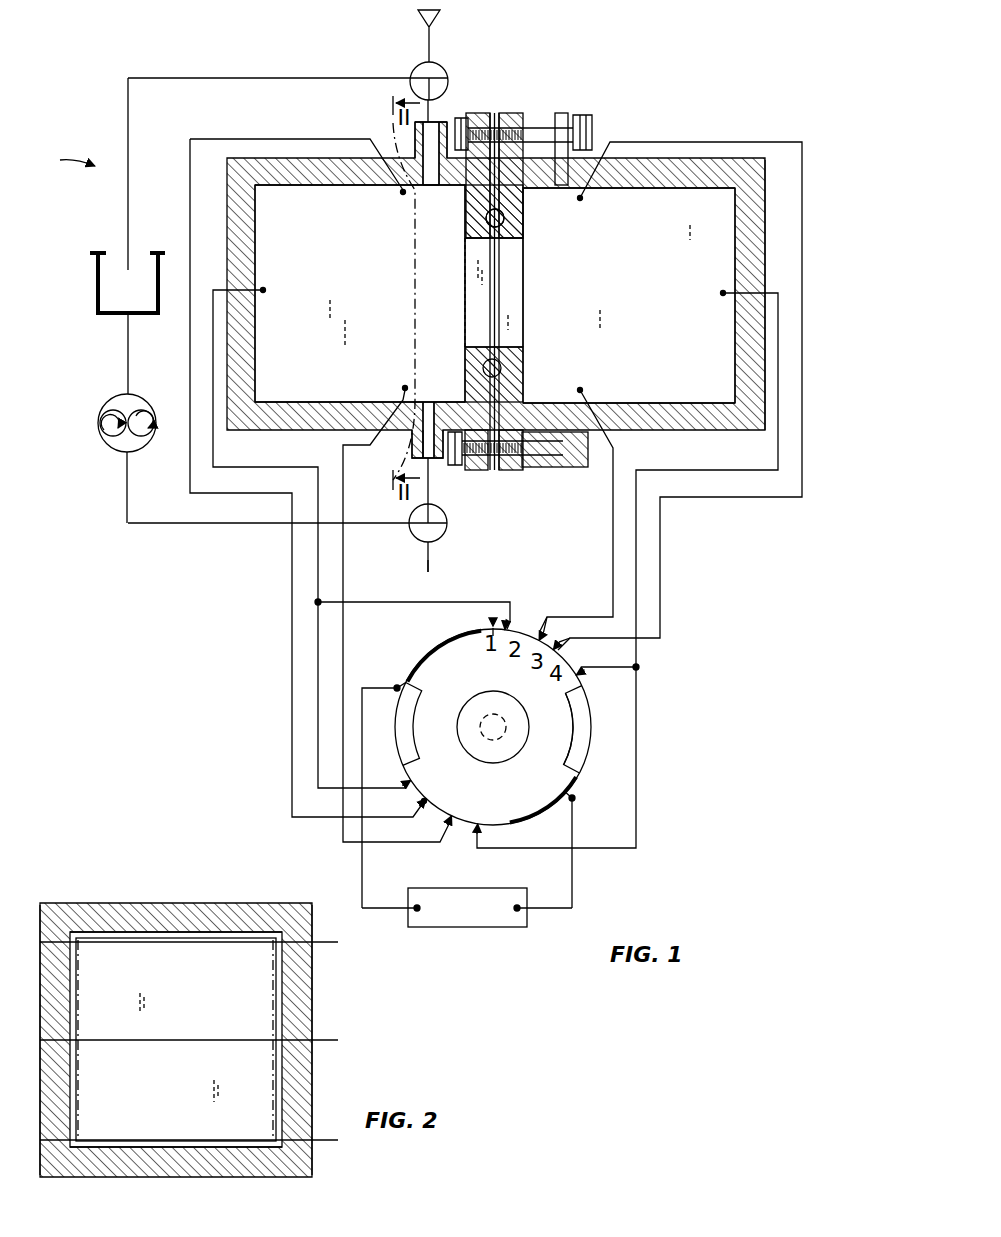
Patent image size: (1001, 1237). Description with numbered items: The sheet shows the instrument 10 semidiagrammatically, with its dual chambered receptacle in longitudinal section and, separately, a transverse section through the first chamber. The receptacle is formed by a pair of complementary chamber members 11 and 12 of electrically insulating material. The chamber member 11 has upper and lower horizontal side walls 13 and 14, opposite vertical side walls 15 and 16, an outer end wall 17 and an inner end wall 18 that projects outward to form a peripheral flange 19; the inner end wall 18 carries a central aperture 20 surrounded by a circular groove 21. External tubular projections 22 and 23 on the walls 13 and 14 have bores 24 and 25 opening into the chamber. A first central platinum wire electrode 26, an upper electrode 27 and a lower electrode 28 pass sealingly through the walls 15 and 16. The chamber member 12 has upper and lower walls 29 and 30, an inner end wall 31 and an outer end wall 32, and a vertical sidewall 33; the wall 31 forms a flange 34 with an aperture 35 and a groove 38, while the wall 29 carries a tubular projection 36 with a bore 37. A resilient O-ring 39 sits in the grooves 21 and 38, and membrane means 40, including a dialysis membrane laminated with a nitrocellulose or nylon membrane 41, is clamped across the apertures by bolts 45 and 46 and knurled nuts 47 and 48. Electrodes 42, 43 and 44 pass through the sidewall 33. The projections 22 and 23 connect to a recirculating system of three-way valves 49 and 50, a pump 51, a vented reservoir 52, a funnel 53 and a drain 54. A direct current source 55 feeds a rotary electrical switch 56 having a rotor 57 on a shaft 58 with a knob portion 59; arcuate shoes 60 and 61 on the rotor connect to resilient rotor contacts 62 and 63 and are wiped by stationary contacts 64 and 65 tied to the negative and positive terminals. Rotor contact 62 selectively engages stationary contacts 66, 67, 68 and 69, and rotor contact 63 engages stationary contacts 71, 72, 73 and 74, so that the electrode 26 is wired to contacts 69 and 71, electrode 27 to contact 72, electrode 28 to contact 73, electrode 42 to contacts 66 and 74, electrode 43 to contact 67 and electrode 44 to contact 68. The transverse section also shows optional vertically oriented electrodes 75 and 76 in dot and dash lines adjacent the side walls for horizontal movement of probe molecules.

In FIG. 1, the instrument 10 is at (63, 158).
In FIG. 1, the chamber member 11 is at (229, 216).
In FIG. 2, the chamber member 11 is at (80, 902).
In FIG. 1, the chamber member 12 is at (766, 210).
In FIG. 1, the upper horizontal side wall 13 is at (320, 186).
In FIG. 2, the upper horizontal side wall 13 is at (222, 902).
In FIG. 1, the lower horizontal side wall 14 is at (330, 401).
In FIG. 2, the lower horizontal side wall 14 is at (205, 1178).
In FIG. 1, the vertical side wall 15 is at (347, 308).
In FIG. 2, the vertical side wall 15 is at (312, 1062).
In FIG. 2, the vertical side wall 16 is at (40, 1072).
In FIG. 1, the outer vertical end wall 17 is at (255, 346).
In FIG. 2, the outer vertical end wall 17 is at (179, 1047).
In FIG. 1, the inner end wall 18 is at (466, 224).
In FIG. 1, the peripheral flange 19 is at (482, 112).
In FIG. 1, the aperture 20 is at (478, 349).
In FIG. 1, the circular groove 21 is at (483, 368).
In FIG. 1, the external tubular projection 22 is at (443, 121).
In FIG. 1, the external tubular projection 23 is at (437, 459).
In FIG. 1, the bore 24 is at (439, 186).
In FIG. 1, the bore 25 is at (433, 438).
In FIG. 1, the first central platinum wire electrode 26 is at (264, 290).
In FIG. 2, the first central platinum wire electrode 26 is at (170, 1039).
In FIG. 1, the upper platinum wire electrode 27 is at (401, 194).
In FIG. 2, the upper platinum wire electrode 27 is at (165, 944).
In FIG. 1, the lower platinum wire electrode 28 is at (404, 387).
In FIG. 2, the lower platinum wire electrode 28 is at (118, 1139).
In FIG. 1, the upper wall 29 is at (680, 189).
In FIG. 1, the lower wall 30 is at (650, 402).
In FIG. 1, the inner end wall 31 is at (523, 371).
In FIG. 1, the outer end wall 32 is at (735, 346).
In FIG. 1, the vertical sidewall 33 is at (645, 277).
In FIG. 1, the peripheral flange 34 is at (510, 112).
In FIG. 1, the aperture 35 is at (510, 350).
In FIG. 1, the external tubular projection 36 is at (566, 115).
In FIG. 1, the bore 37 is at (545, 186).
In FIG. 1, the circular groove 38 is at (504, 218).
In FIG. 1, the O-ring 39 is at (486, 218).
In FIG. 1, the membrane means 40 is at (489, 298).
In FIG. 1, the nitrocellulose or nylon membrane 41 is at (500, 292).
In FIG. 1, the platinum wire electrode 42 is at (722, 292).
In FIG. 1, the platinum wire electrode 43 is at (582, 200).
In FIG. 1, the lower platinum wire electrode 44 is at (582, 389).
In FIG. 1, the bolt 45 is at (540, 128).
In FIG. 1, the bolt 46 is at (540, 456).
In FIG. 1, the nut 47 is at (593, 130).
In FIG. 1, the nut 48 is at (578, 468).
In FIG. 1, the three-way valve 49 is at (442, 68).
In FIG. 1, the three-way valve 50 is at (448, 528).
In FIG. 1, the pump 51 is at (103, 446).
In FIG. 1, the vented reservoir 52 is at (98, 292).
In FIG. 1, the funnel 53 is at (436, 14).
In FIG. 1, the drain 54 is at (430, 564).
In FIG. 1, the direct current source 55 is at (480, 928).
In FIG. 1, the rotary electrical switch 56 is at (592, 727).
In FIG. 1, the rotor 57 is at (572, 752).
In FIG. 1, the rotary shaft 58 is at (490, 735).
In FIG. 1, the knob portion 59 is at (480, 691).
In FIG. 1, the arcuate shoe 60 is at (534, 821).
In FIG. 1, the arcuate shoe 61 is at (447, 636).
In FIG. 1, the resilient electrical contact member 62 is at (566, 690).
In FIG. 1, the resilient electrical contact member 63 is at (410, 768).
In FIG. 1, the stationary resilient electrical contact 64 is at (575, 798).
In FIG. 1, the stationary resilient electrical contact 65 is at (397, 686).
In FIG. 1, the stationary contact 66 is at (585, 672).
In FIG. 1, the stationary contact 67 is at (568, 650).
In FIG. 1, the stationary contact 68 is at (548, 633).
In FIG. 1, the stationary contact 69 is at (510, 620).
In FIG. 1, the stationary contact 71 is at (404, 784).
In FIG. 1, the stationary contact 72 is at (420, 803).
In FIG. 1, the stationary contact 73 is at (446, 826).
In FIG. 1, the stationary contact 74 is at (476, 836).
In FIG. 2, the electrode 75 is at (82, 1006).
In FIG. 2, the electrode 76 is at (270, 1012).